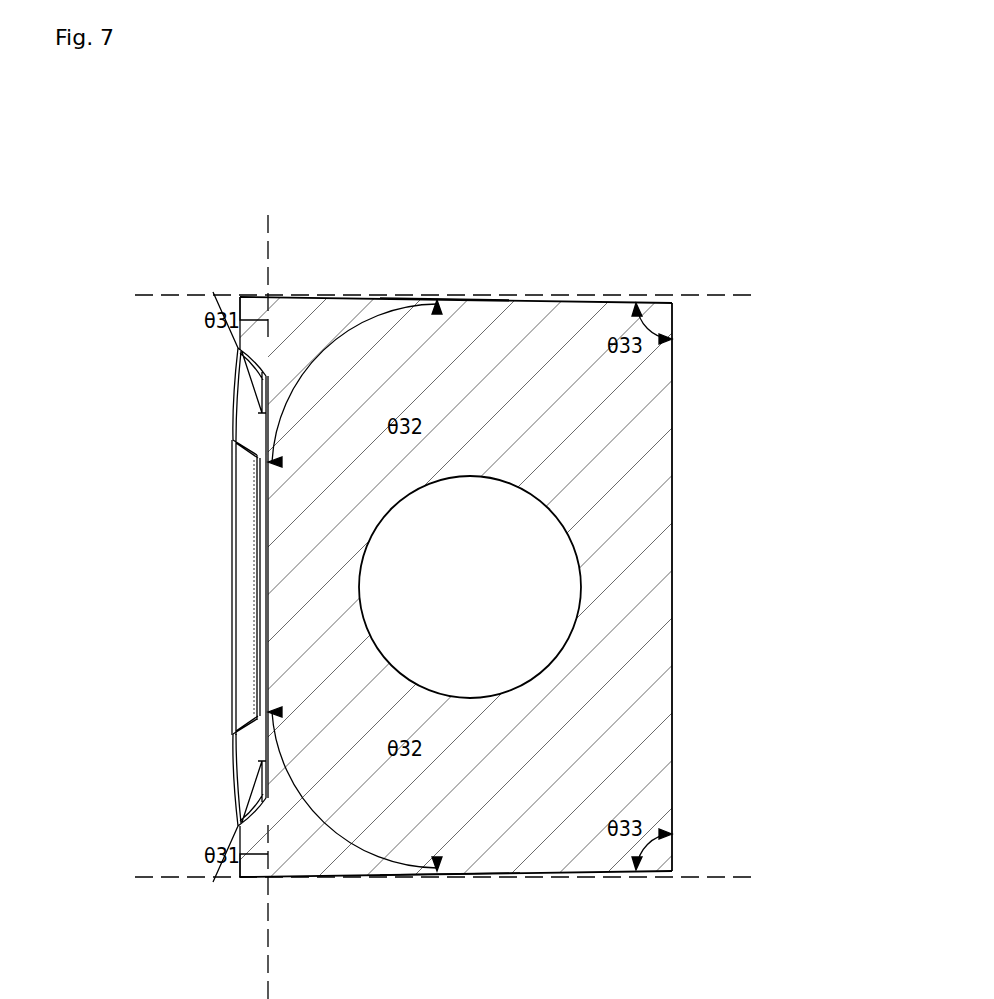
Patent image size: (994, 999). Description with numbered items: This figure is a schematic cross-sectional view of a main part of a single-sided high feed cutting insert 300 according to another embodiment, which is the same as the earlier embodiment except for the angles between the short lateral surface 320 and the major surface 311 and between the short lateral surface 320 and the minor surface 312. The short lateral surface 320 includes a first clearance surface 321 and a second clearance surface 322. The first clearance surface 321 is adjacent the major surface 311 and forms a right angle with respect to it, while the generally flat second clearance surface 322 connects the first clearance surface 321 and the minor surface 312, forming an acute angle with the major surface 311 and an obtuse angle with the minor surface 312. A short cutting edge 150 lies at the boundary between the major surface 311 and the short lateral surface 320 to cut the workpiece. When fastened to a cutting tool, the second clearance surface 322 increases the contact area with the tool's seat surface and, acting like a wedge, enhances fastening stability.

The short cutting edge 150 is at (213, 292).
The single-sided high feed cutting insert 300 is at (516, 569).
The major surface 311 is at (268, 613).
The minor surface 312 is at (673, 643).
The short lateral surface 320 is at (550, 301).
The first clearance surface 321 is at (238, 295).
The second clearance surface 322 is at (497, 298).